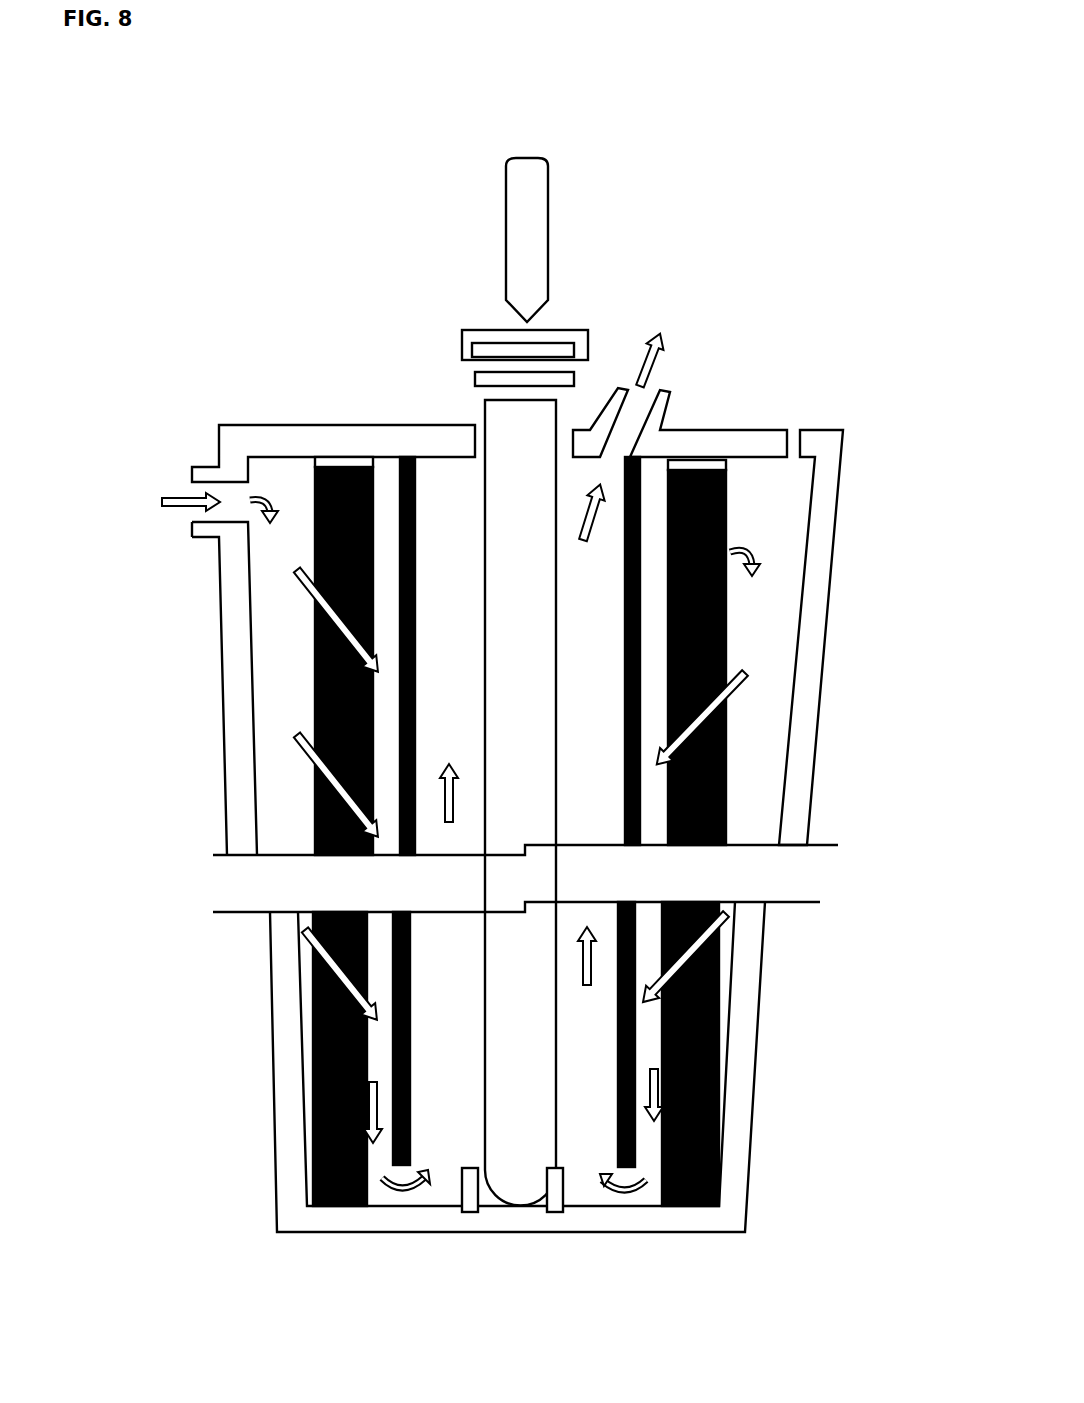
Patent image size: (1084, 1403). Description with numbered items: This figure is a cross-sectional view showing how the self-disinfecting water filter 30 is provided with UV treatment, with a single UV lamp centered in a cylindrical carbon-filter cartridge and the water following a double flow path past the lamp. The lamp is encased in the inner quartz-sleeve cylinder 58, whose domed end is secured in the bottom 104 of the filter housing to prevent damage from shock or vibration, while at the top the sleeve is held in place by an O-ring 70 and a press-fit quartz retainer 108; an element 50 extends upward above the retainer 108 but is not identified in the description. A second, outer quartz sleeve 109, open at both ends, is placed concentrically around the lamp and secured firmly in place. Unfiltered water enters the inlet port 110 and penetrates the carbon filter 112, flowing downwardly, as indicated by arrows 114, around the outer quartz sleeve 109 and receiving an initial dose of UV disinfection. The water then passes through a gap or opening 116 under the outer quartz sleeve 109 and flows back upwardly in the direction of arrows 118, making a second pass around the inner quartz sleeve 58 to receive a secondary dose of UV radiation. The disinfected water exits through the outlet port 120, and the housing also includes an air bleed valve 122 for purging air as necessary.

The self-disinfecting water filter 30 is at (798, 103).
The shaft 50 is at (554, 160).
The quartz retainer 108 is at (462, 334).
The O-ring 70 is at (476, 374).
The quartz-sleeve cylinder 58 is at (488, 402).
The inlet port 110 is at (180, 487).
The outlet port 120 is at (672, 326).
The air bleed valve 122 is at (793, 420).
The arrows 114 is at (745, 673).
The outer quartz sleeve 109 is at (410, 855).
The arrows 118 is at (462, 818).
The carbon filter 112 is at (690, 845).
The gap or opening 116 is at (403, 1195).
The bottom 104 is at (560, 1210).